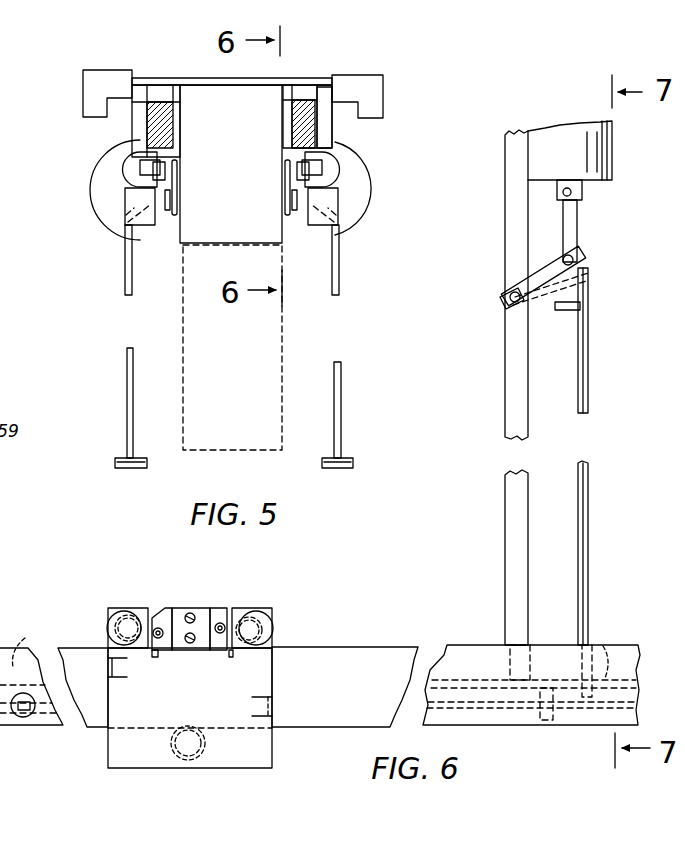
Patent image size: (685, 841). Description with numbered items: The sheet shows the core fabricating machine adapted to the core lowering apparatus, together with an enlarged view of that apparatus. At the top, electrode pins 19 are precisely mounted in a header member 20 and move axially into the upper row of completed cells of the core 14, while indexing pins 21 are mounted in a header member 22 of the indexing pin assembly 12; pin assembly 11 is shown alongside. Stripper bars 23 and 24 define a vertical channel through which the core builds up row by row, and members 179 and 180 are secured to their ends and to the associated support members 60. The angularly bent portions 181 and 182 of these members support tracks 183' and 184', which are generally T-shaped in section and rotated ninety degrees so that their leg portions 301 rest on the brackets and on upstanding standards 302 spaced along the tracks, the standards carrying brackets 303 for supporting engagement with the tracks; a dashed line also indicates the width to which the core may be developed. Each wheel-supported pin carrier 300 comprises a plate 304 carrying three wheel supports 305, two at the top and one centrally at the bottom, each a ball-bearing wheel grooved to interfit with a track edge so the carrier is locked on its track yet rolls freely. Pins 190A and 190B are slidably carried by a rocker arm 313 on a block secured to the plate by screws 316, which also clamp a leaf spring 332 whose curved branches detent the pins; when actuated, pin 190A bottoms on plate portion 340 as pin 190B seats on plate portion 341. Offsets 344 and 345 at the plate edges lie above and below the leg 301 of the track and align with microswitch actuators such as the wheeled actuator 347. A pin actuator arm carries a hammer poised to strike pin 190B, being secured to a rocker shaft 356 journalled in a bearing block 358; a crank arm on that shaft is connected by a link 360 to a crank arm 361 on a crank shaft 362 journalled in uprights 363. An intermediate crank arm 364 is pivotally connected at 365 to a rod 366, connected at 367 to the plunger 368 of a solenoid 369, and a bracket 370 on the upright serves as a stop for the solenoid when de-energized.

In FIG. 5, the vertical plate 11 is at (319, 76).
In FIG. 5, the indexing pin assembly 12 is at (157, 72).
In FIG. 5, the core 14 is at (176, 250).
In FIG. 5, the electrode pins 19 is at (327, 88).
In FIG. 5, the header member 20 is at (383, 104).
In FIG. 5, the indexing pins 21 is at (221, 77).
In FIG. 5, the header member 22 is at (83, 83).
In FIG. 5, the stripper bar 23 is at (166, 121).
In FIG. 5, the stripper bar 24 is at (297, 121).
In FIG. 5, the support members 60 is at (133, 135).
In FIG. 5, the member 179 is at (363, 160).
In FIG. 5, the member 180 is at (100, 156).
In FIG. 5, the angularly bent portion 181 is at (339, 235).
In FIG. 5, the angularly bent portion 182 is at (132, 235).
In FIG. 5, the track 183' is at (369, 206).
In FIG. 6, the track 183' is at (240, 668).
In FIG. 5, the track 184' is at (103, 206).
In FIG. 5, the pin 190A is at (186, 168).
In FIG. 6, the pin 190A is at (157, 628).
In FIG. 6, the pin 190B is at (244, 630).
In FIG. 5, the pin carrier 300 is at (186, 195).
In FIG. 6, the pin carrier 300 is at (297, 621).
In FIG. 5, the leg portion 301 is at (150, 181).
In FIG. 6, the leg portion 301 is at (611, 632).
In FIG. 5, the standards 302 is at (126, 371).
In FIG. 5, the brackets 303 is at (121, 212).
In FIG. 6, the plate 304 is at (272, 755).
In FIG. 6, the wheel supports 305 is at (99, 638).
In FIG. 6, the rocker arm 313 is at (245, 608).
In FIG. 6, the screws 316 is at (192, 617).
In FIG. 6, the leaf spring 332 is at (162, 606).
In FIG. 6, the plate portion 340 is at (158, 650).
In FIG. 6, the plate portion 341 is at (230, 650).
In FIG. 6, the offset 344 is at (108, 670).
In FIG. 6, the offset 345 is at (272, 707).
In FIG. 6, the wheeled actuator 347 is at (28, 713).
In FIG. 6, the rocker shaft 356 is at (498, 680).
In FIG. 6, the bearing block 358 is at (547, 727).
In FIG. 6, the link 360 is at (588, 382).
In FIG. 6, the crank arm 361 is at (588, 277).
In FIG. 6, the crank shaft 362 is at (511, 292).
In FIG. 6, the upright 363 is at (508, 425).
In FIG. 6, the intermediate crank arm 364 is at (550, 262).
In FIG. 6, the pivot 365 is at (578, 258).
In FIG. 6, the rod 366 is at (578, 228).
In FIG. 6, the connection 367 is at (567, 188).
In FIG. 6, the plunger 368 is at (583, 185).
In FIG. 6, the solenoid 369 is at (608, 145).
In FIG. 6, the bracket 370 is at (568, 312).